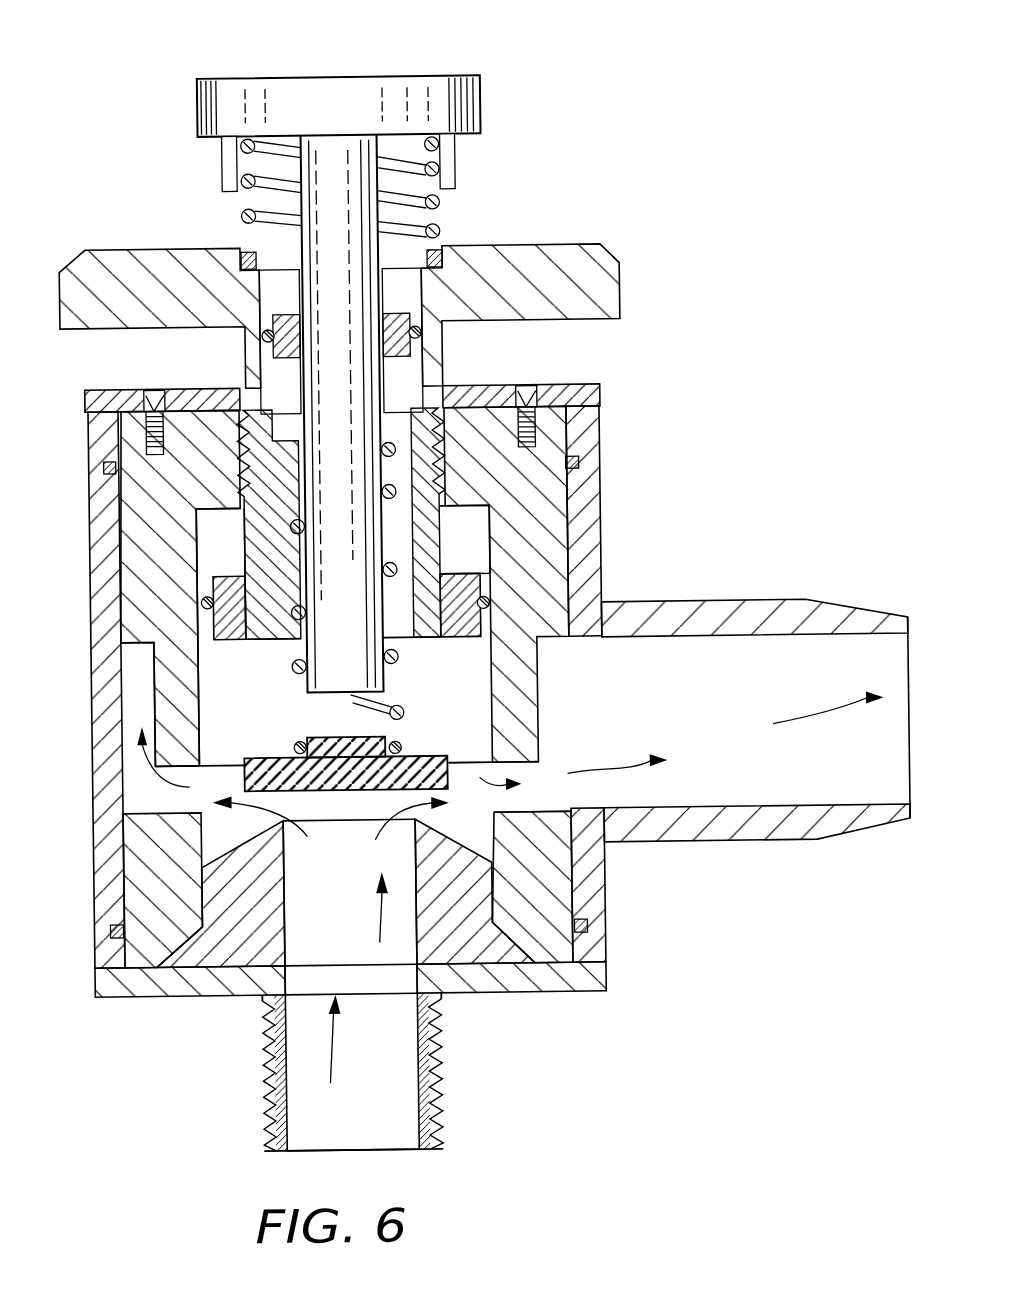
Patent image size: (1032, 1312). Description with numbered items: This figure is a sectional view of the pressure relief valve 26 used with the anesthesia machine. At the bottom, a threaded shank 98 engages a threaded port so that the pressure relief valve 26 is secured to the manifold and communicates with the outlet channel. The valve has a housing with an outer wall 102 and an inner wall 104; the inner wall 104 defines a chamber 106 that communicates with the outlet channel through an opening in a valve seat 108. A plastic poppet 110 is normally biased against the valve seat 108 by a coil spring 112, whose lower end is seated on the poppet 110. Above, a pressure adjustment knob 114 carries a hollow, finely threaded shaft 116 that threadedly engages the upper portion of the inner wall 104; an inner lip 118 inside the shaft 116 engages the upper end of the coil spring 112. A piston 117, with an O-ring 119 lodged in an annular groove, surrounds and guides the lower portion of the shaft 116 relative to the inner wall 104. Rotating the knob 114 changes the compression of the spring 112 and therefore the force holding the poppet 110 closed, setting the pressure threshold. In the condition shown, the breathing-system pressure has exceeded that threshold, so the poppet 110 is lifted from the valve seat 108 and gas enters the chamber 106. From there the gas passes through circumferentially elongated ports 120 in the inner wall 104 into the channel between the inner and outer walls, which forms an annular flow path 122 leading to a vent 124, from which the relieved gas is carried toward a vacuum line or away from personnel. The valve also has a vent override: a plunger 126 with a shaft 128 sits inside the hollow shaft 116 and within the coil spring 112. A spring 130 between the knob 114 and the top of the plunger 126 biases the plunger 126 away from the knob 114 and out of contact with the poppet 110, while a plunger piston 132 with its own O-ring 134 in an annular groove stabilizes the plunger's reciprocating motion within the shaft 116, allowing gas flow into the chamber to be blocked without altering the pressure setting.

The pressure relief valve 26 is at (580, 163).
The threaded shank 98 is at (435, 1061).
The outer wall 102 is at (83, 815).
The inner wall 104 is at (136, 559).
The chamber 106 is at (268, 695).
The valve seat 108 is at (224, 947).
The plastic poppet 110 is at (409, 757).
The coil spring 112 is at (392, 707).
The pressure adjustment knob 114 is at (120, 245).
The shaft 116 is at (249, 354).
The piston 117 is at (458, 571).
The inner lip 118 is at (413, 411).
The O-ring 119 is at (481, 602).
The circumferentially elongated ports 120 is at (495, 780).
The annular flow path 122 is at (136, 707).
The vent 124 is at (748, 605).
The plunger 126 is at (287, 77).
The plunger shaft 128 is at (305, 236).
The spring 130 is at (442, 233).
The plunger piston 132 is at (404, 311).
The O-ring 134 is at (422, 335).